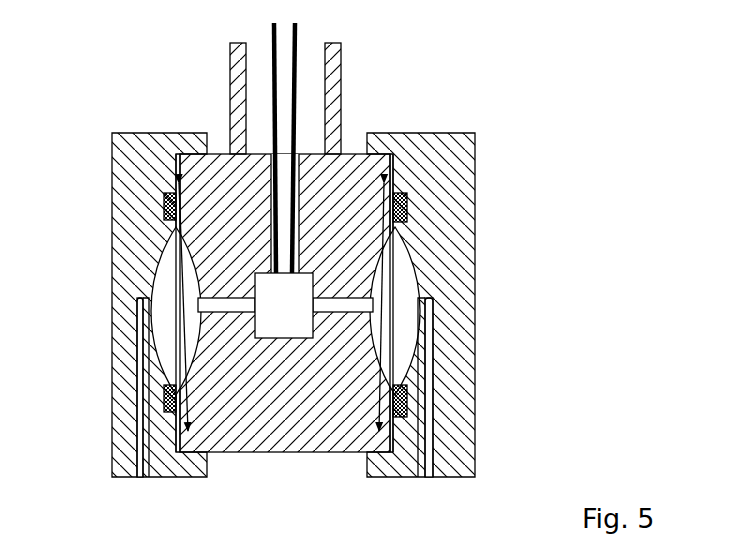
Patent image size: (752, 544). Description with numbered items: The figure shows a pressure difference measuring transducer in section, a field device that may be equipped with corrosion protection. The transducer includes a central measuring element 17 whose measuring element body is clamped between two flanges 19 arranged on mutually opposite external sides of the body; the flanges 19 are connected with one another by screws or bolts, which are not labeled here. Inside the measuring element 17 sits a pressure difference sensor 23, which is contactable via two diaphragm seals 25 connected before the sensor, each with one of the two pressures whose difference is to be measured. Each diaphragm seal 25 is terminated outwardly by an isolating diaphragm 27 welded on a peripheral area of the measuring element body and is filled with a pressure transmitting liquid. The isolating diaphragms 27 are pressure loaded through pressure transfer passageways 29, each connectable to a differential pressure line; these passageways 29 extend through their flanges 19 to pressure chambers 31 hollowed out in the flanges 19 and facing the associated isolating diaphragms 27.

The measuring element 17 is at (228, 193).
The flanges 19 is at (130, 220).
The pressure difference sensor 23 is at (284, 305).
The diaphragm seals 25 is at (365, 317).
The isolating diaphragm 27 is at (170, 332).
The pressure transfer passageway 29 is at (137, 372).
The pressure chambers 31 is at (158, 287).